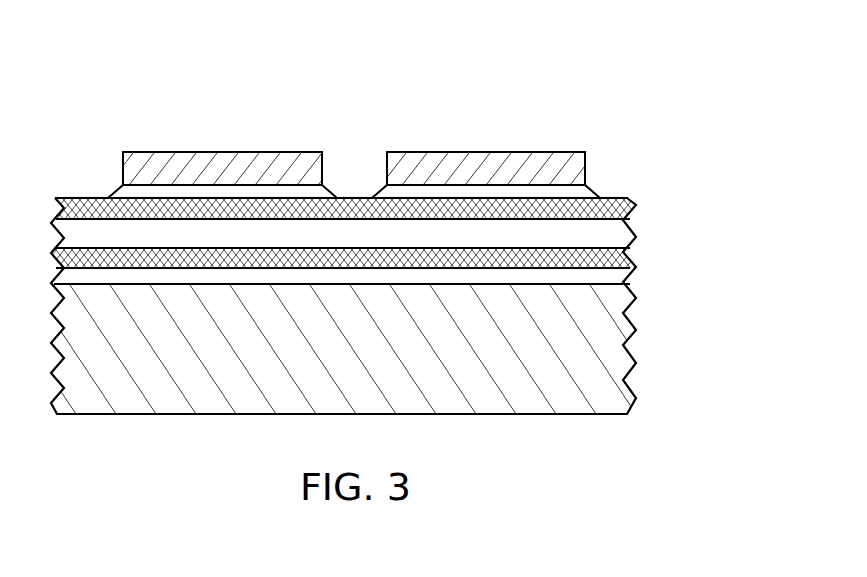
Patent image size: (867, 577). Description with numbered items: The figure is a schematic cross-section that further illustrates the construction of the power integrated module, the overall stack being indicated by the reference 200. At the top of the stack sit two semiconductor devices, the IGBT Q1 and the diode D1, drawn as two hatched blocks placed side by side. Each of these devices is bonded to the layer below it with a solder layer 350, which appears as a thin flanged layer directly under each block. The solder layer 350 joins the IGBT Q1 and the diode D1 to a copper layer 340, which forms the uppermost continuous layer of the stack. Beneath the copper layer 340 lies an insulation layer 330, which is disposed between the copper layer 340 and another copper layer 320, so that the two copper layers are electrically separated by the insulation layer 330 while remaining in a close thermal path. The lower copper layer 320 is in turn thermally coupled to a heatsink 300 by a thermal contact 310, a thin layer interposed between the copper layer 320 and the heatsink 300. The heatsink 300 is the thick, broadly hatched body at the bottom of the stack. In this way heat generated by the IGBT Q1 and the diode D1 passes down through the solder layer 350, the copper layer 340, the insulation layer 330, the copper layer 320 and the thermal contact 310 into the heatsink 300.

The semiconductor device structure 200 is at (652, 105).
The heatsink 300 is at (632, 343).
The thermal contact 310 is at (630, 283).
The copper layer 320 is at (633, 262).
The insulation layer 330 is at (630, 233).
The copper layer 340 is at (636, 207).
The solder layer 350 is at (597, 195).
The IGBT Q1 is at (222, 146).
The diode D1 is at (486, 146).